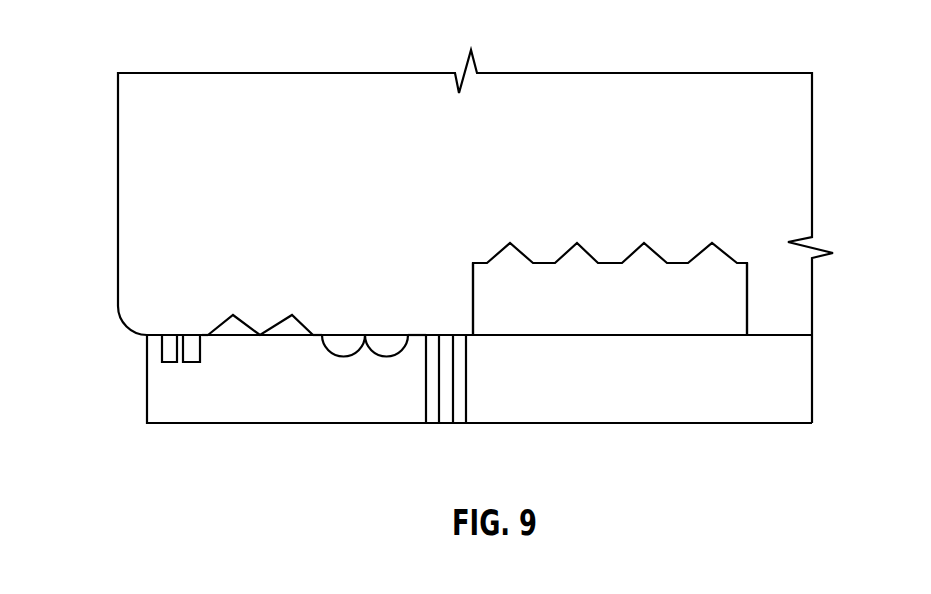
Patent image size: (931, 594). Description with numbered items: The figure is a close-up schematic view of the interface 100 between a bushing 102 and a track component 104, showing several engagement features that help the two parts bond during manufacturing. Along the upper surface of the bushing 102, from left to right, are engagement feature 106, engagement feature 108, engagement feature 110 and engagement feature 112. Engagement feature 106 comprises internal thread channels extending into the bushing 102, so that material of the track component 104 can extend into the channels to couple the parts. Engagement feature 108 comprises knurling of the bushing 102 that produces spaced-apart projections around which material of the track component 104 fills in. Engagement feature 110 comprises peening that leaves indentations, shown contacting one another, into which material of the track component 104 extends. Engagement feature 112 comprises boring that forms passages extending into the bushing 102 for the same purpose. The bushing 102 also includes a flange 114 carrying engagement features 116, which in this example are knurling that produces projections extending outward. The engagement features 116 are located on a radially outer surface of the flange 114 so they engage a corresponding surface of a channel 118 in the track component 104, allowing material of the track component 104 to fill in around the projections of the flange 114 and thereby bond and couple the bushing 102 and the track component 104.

The interface 100 is at (140, 335).
The bushing 102 is at (678, 402).
The track component 104 is at (487, 92).
The engagement feature 106 is at (193, 363).
The engagement feature 108 is at (222, 323).
The engagement feature 110 is at (330, 350).
The engagement feature 112 is at (467, 380).
The flange 114 is at (758, 308).
The engagement features 116 is at (683, 210).
The channel 118 is at (483, 262).